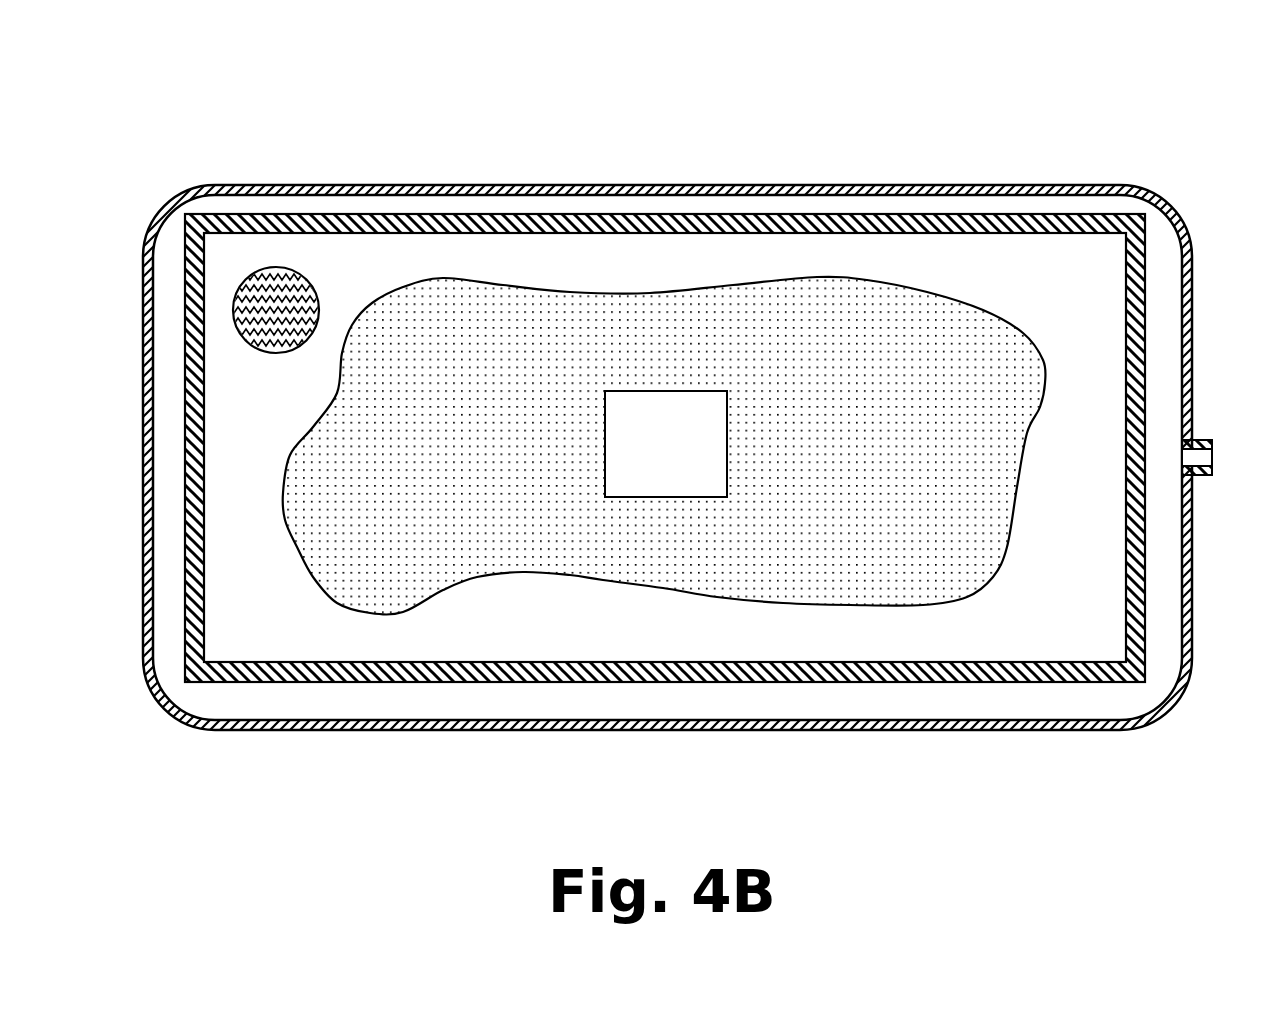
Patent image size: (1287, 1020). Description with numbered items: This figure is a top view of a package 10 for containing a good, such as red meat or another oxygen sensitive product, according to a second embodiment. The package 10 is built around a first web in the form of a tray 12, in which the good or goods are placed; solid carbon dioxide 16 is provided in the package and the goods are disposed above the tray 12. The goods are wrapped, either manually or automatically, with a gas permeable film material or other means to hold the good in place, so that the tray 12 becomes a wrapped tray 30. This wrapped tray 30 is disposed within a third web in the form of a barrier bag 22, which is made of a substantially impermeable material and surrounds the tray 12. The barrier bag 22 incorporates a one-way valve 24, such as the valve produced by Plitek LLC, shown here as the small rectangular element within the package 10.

The package 10 is at (1190, 133).
The tray 12 is at (204, 422).
The solid carbon dioxide 16 is at (308, 286).
The barrier bag 22 is at (688, 186).
The one-way valve 24 is at (663, 473).
The wrapped tray 30 is at (900, 680).